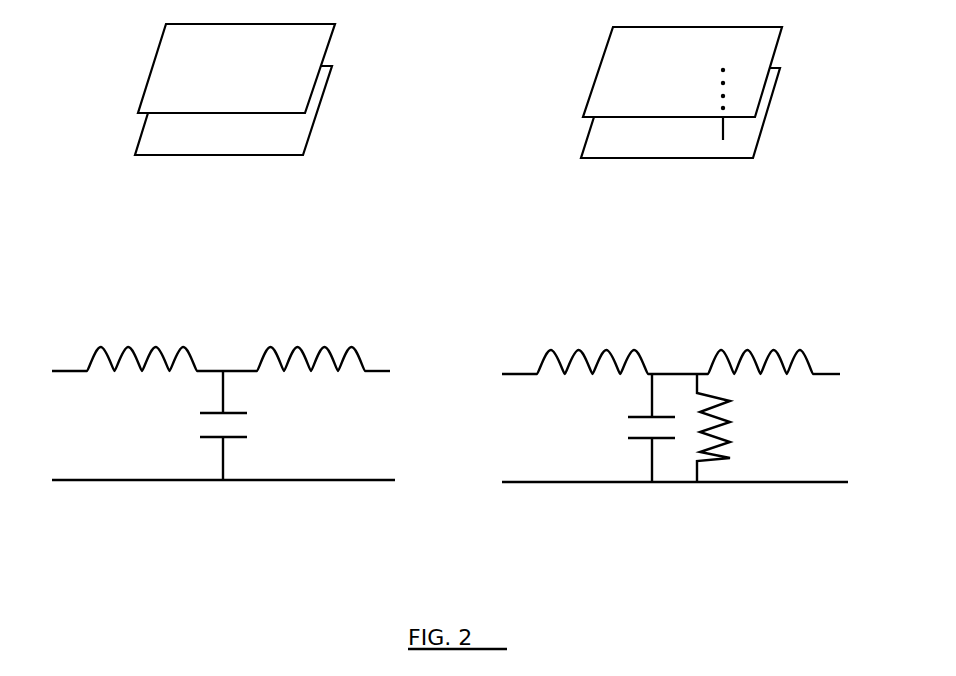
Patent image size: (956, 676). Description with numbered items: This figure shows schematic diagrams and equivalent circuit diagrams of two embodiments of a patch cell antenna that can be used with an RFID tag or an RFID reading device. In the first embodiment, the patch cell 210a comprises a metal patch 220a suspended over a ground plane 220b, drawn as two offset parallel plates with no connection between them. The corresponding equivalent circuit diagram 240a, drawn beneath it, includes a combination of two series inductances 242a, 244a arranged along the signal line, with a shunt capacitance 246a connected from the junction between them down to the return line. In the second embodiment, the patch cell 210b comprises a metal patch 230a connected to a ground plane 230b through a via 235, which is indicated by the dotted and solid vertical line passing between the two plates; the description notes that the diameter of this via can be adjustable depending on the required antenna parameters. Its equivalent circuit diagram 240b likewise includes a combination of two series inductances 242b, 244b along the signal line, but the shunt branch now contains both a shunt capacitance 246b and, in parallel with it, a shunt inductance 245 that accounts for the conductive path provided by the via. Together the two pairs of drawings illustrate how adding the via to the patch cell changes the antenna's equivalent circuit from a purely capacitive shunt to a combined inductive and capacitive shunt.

The patch cell 210a is at (186, 89).
The patch cell 210b is at (725, 105).
The metal patch 220a is at (236, 68).
The ground plane 220b is at (233, 110).
The metal patch 230a is at (682, 72).
The ground plane 230b is at (680, 113).
The via 235 is at (757, 138).
The equivalent circuit diagram 240a is at (295, 302).
The equivalent circuit diagram 240b is at (719, 315).
The series inductance 242a is at (142, 344).
The series inductance 244a is at (311, 344).
The shunt capacitance 246a is at (261, 425).
The series inductance 242b is at (592, 344).
The series inductance 244b is at (760, 340).
The shunt capacitance 246b is at (621, 428).
The shunt inductance 245 is at (743, 428).